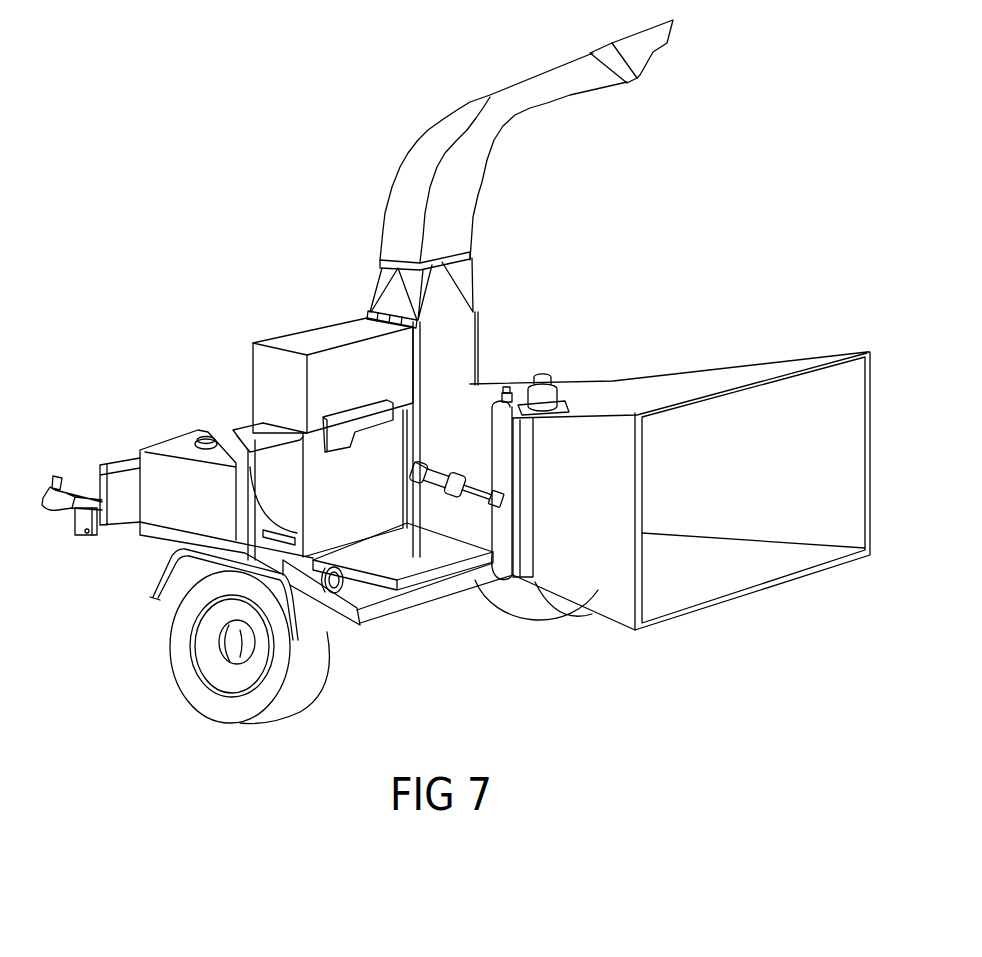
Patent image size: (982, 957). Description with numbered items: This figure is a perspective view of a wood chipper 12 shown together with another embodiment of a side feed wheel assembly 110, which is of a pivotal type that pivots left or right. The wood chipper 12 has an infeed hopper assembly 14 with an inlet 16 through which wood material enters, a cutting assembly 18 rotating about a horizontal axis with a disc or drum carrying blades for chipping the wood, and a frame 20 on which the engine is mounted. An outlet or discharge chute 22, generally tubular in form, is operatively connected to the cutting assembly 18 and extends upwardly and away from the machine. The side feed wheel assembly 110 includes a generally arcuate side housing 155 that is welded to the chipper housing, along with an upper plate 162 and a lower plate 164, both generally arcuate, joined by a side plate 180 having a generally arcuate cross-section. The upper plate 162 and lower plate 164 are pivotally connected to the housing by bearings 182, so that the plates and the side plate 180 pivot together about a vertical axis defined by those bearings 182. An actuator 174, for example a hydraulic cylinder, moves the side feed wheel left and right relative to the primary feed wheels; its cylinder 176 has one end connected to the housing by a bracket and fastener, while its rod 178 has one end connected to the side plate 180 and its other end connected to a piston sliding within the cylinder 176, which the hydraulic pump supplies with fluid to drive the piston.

The wood chipper 12 is at (232, 371).
The infeed hopper assembly 14 is at (763, 367).
The inlet 16 is at (840, 518).
The cutting assembly 18 is at (348, 333).
The frame 20 is at (365, 620).
The discharge chute 22 is at (430, 135).
The side feed wheel assembly 110 is at (680, 326).
The side housing 155 is at (520, 540).
The upper plate 162 is at (522, 386).
The lower plate 164 is at (535, 555).
The actuator 174 is at (432, 480).
The cylinder 176 is at (432, 470).
The rod 178 is at (462, 500).
The side plate 180 is at (494, 538).
The bearings 182 is at (507, 388).